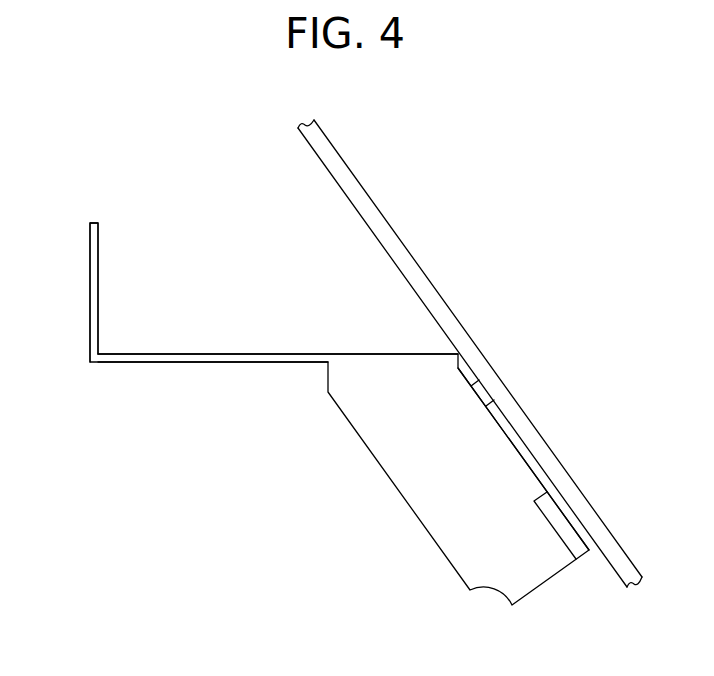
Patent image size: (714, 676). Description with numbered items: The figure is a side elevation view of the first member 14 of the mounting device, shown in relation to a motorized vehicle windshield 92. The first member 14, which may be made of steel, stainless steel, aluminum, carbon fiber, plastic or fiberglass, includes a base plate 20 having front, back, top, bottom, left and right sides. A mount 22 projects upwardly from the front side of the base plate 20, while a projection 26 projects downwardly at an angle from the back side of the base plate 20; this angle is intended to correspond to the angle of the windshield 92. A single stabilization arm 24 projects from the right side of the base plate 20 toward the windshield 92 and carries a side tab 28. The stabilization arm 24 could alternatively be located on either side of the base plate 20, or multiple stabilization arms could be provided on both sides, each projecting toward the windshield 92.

The first member 14 is at (90, 217).
The base plate 20 is at (241, 353).
The mount 22 is at (98, 265).
The stabilization arm 24 is at (488, 455).
The projection 26 is at (478, 382).
The side tab 28 is at (560, 525).
The motorized vehicle windshield 92 is at (390, 225).